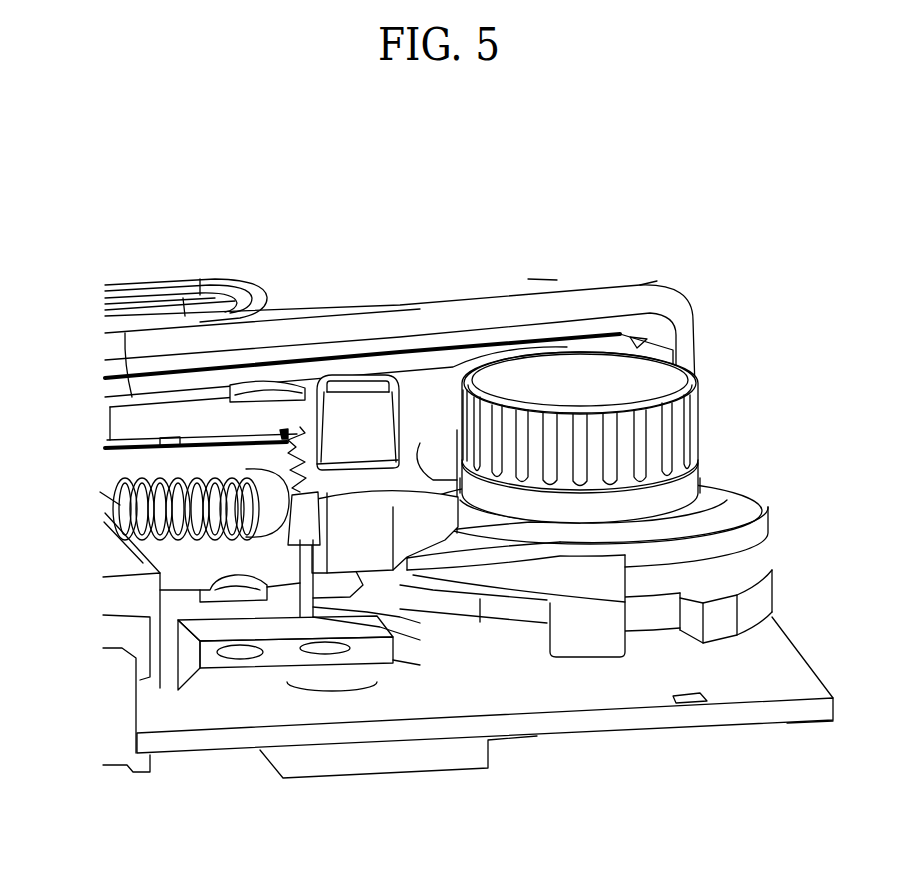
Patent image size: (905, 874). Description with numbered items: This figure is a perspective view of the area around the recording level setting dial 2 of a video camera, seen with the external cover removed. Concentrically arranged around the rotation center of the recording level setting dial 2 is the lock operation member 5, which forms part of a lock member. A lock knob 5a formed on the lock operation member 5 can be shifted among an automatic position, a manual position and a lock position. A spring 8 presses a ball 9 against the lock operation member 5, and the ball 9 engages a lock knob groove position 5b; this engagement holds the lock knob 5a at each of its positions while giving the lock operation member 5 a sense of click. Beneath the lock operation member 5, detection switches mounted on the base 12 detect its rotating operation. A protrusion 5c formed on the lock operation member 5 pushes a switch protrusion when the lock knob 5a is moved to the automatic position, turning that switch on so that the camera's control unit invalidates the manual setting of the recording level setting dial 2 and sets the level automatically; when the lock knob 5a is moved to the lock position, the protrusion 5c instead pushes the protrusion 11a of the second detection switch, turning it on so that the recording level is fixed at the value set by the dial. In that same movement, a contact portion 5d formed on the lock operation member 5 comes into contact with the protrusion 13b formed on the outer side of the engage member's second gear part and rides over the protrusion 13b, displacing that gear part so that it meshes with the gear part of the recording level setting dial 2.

The recording level setting dial 2 is at (590, 370).
The lock operation member 5 is at (750, 517).
The lock knob 5a is at (355, 410).
The lock knob groove position 5b is at (287, 428).
The protrusion 5c is at (330, 578).
The contact portion 5d is at (595, 640).
The spring 8 is at (123, 498).
The ball 9 is at (270, 493).
The protrusion 11a is at (403, 597).
The base 12 is at (790, 668).
The protrusion 13b is at (726, 628).